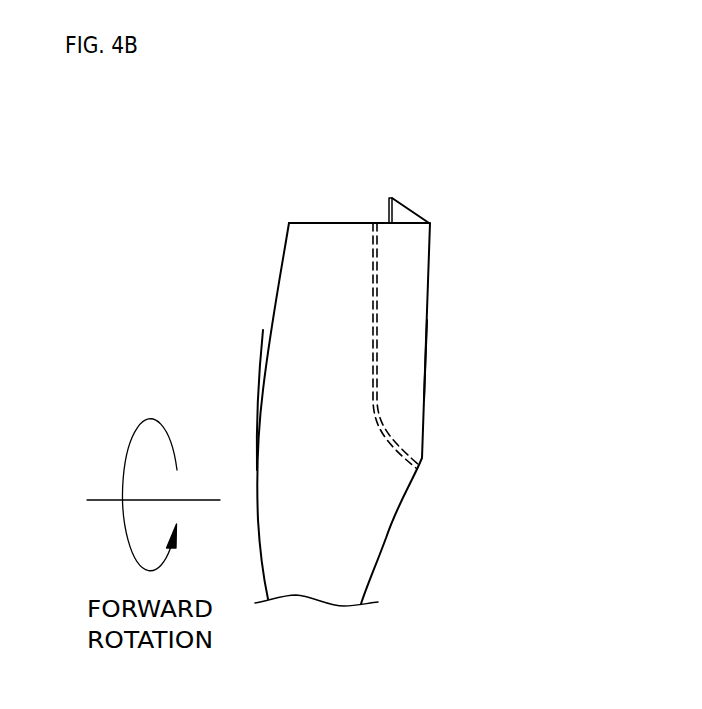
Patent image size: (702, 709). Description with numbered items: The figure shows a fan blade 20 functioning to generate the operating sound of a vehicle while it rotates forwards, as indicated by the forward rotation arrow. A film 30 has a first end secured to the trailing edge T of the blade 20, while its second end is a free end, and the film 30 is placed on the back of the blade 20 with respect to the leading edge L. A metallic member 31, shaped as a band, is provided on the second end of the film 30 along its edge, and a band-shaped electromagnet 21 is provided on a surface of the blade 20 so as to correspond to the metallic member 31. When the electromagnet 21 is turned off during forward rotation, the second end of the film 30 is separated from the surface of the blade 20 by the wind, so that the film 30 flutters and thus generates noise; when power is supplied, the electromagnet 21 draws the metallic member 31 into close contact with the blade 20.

The blade 20 is at (293, 305).
The electromagnet 21 is at (373, 248).
The film 30 is at (408, 215).
The metallic member 31 is at (388, 198).
The leading edge L is at (261, 376).
The trailing edge T is at (427, 352).